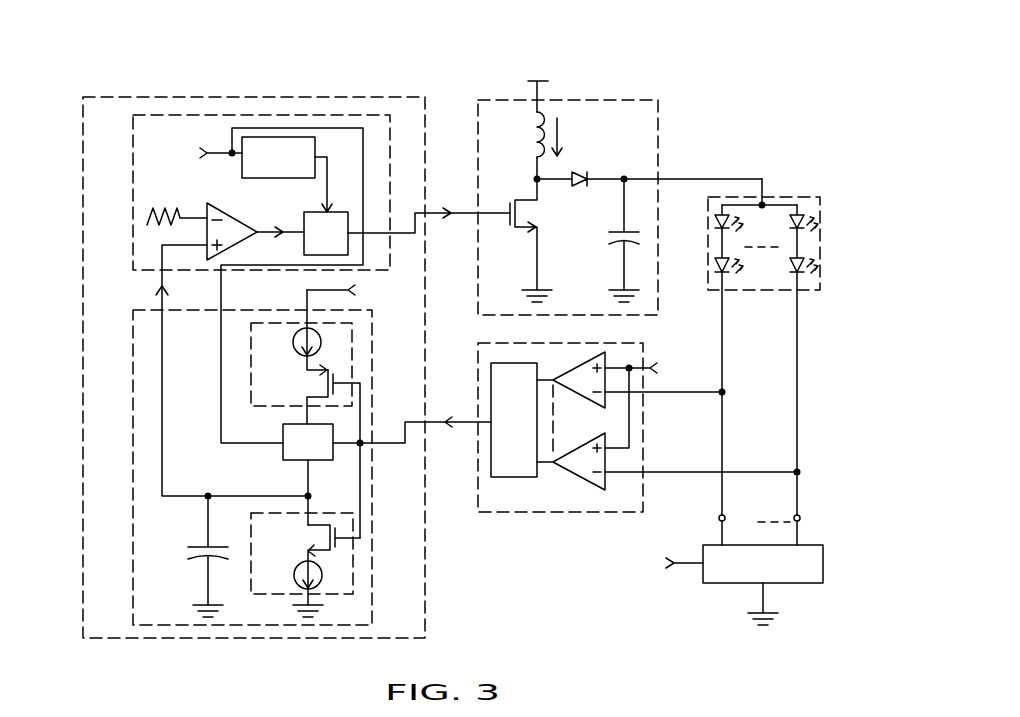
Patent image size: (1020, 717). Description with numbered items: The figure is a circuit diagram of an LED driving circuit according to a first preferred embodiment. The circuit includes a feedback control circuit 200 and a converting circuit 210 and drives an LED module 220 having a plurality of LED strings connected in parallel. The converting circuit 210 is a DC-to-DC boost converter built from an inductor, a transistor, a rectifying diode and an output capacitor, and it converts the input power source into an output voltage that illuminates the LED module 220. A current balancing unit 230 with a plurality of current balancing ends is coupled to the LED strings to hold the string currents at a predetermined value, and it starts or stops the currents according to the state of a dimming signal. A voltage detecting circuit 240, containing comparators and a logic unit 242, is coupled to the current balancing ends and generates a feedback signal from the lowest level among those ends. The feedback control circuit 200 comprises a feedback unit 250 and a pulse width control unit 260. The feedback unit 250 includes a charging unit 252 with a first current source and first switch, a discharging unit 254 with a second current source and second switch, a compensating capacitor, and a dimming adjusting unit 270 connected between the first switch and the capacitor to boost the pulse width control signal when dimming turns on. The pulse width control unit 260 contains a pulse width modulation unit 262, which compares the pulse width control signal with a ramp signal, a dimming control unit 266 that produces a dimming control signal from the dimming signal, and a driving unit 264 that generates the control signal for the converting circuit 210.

The feedback control circuit 200 is at (86, 155).
The converting circuit 210 is at (610, 99).
The LED module 220 is at (834, 236).
The current balancing unit 230 is at (728, 567).
The voltage detecting circuit 240 is at (490, 512).
The logic unit 242 is at (514, 420).
The feedback unit 250 is at (148, 538).
The charging unit 252 is at (348, 359).
The discharging unit 254 is at (352, 558).
The pulse width control unit 260 is at (144, 192).
The pulse width modulation unit 262 is at (236, 200).
The driving unit 264 is at (407, 216).
The dimming control unit 266 is at (260, 174).
The dimming adjusting unit 270 is at (348, 455).